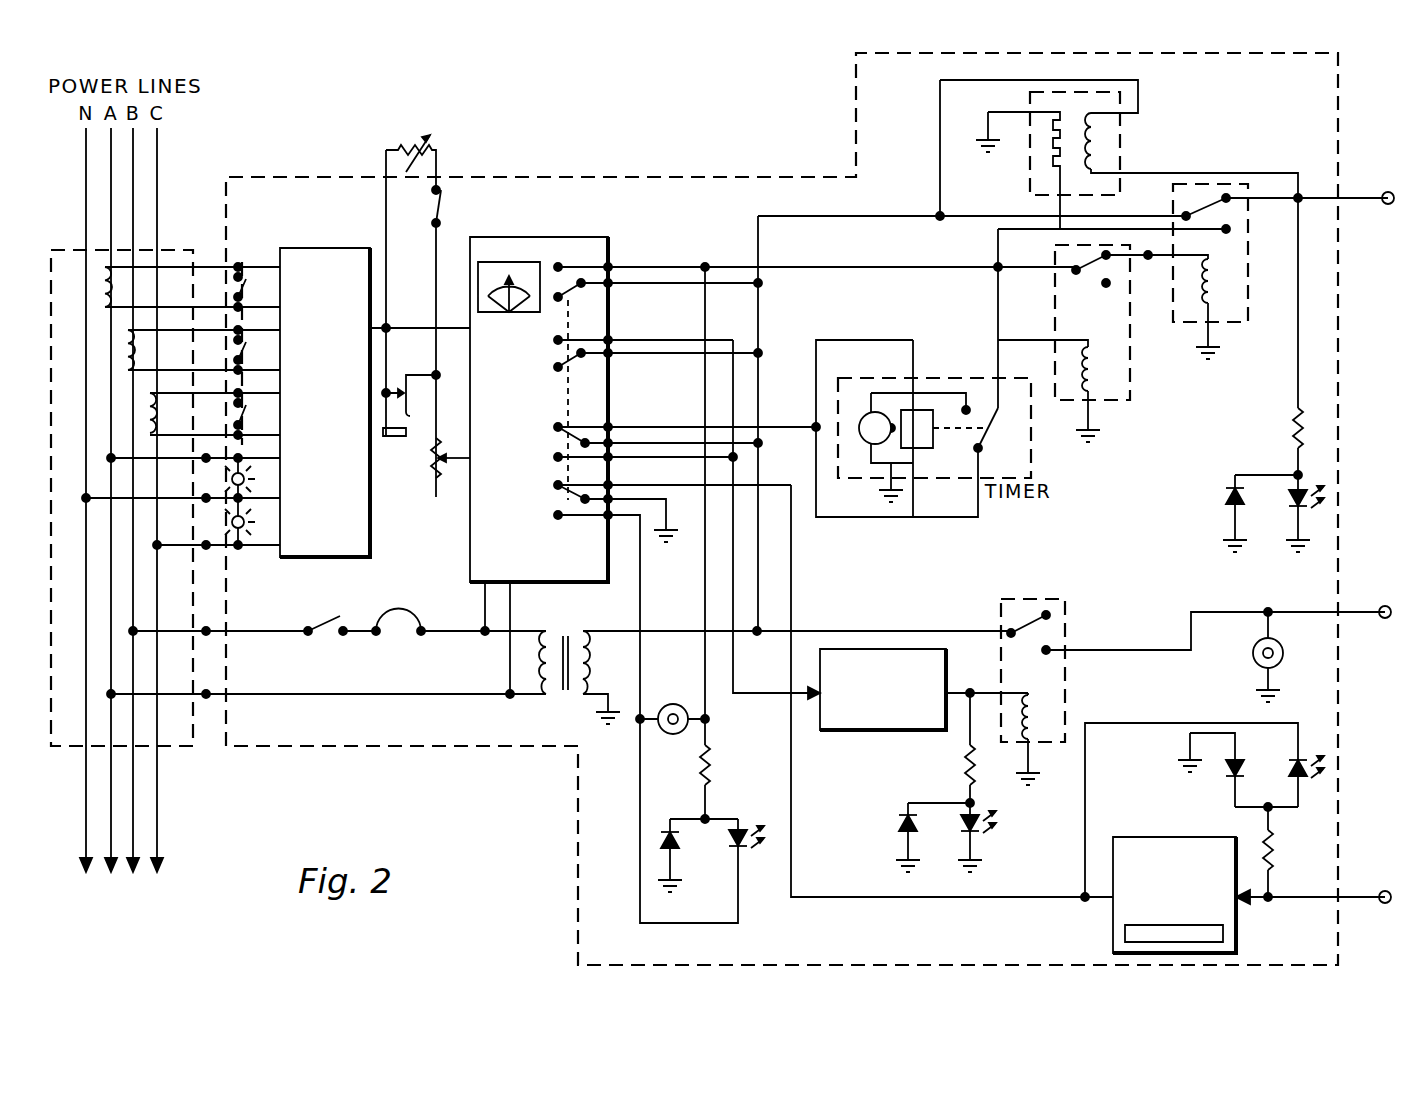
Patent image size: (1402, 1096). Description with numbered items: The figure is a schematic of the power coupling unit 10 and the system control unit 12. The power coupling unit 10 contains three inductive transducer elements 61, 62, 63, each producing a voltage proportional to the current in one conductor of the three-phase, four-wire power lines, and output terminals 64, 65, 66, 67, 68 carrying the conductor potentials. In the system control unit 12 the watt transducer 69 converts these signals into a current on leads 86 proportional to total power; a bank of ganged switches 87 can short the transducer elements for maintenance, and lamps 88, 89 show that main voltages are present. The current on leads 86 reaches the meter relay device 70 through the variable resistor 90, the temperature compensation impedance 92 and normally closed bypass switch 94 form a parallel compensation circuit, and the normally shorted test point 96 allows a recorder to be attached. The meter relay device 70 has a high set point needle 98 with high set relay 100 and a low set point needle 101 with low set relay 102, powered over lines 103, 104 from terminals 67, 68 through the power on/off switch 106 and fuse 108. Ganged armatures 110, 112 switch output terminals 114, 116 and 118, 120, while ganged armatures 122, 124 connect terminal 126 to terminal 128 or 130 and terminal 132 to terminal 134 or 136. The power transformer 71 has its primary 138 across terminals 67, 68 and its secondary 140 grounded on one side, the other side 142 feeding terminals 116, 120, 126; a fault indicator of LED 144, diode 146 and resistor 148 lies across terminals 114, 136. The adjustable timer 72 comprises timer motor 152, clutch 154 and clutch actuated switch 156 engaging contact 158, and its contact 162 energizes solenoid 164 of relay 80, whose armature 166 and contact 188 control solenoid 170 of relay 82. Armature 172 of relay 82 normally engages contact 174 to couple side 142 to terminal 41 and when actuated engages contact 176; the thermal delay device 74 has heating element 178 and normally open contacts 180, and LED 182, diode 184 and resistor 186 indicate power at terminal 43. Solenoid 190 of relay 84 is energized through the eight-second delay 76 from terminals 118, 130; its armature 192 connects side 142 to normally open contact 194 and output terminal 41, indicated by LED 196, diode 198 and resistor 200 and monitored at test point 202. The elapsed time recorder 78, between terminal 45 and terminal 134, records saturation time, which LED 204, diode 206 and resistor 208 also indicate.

The power coupling unit 10 is at (173, 757).
The system control unit 12 is at (343, 757).
The system power terminal 41 is at (1385, 608).
The system power terminal 43 is at (1384, 194).
The output terminal 45 is at (1384, 893).
The inductive transducer element 61 is at (104, 287).
The inductive transducer element 62 is at (128, 350).
The inductive transducer element 63 is at (150, 413).
The output terminal 64 is at (208, 462).
The output terminal 65 is at (208, 500).
The output terminal 66 is at (208, 547).
The output terminal 67 is at (208, 629).
The output terminal 68 is at (208, 692).
The watt transducer 69 is at (328, 470).
The meter relay device 70 is at (472, 556).
The power transformer 71 is at (566, 700).
The adjustable timer 72 is at (1012, 378).
The thermal time delay device 74 is at (1122, 150).
The eight-second delay 76 is at (878, 735).
The elapsed time recorder 78 is at (1170, 838).
The relay 80 is at (1132, 384).
The relay 82 is at (1238, 322).
The relay 84 is at (1047, 599).
The output leads 86 is at (388, 331).
The bank of ganged switches 87 is at (246, 266).
The lamp 88 is at (252, 480).
The lamp 89 is at (252, 522).
The variable resistor 90 is at (438, 465).
The temperature compensation impedance 92 is at (410, 150).
The temperature compensation bypass switch 94 is at (441, 206).
The test point 96 is at (406, 432).
The high set point needle 98 is at (528, 300).
The high set relay 100 is at (560, 314).
The low set point needle 101 is at (492, 300).
The low set relay 102 is at (558, 455).
The line 103 is at (485, 628).
The line 104 is at (512, 628).
The power on/off switch 106 is at (328, 632).
The fuse 108 is at (395, 632).
The armature 110 is at (568, 268).
The armature 112 is at (583, 358).
The relay output terminal 114 is at (628, 268).
The relay output terminal 116 is at (618, 284).
The relay output terminal 118 is at (626, 341).
The relay output terminal 120 is at (626, 354).
The armature 122 is at (560, 426).
The armature 124 is at (556, 500).
The output terminal 126 is at (640, 444).
The output terminal 128 is at (622, 436).
The output terminal 130 is at (618, 460).
The output terminal 132 is at (650, 500).
The output terminal 134 is at (640, 486).
The output terminal 136 is at (650, 516).
The primary 138 is at (546, 695).
The secondary 140 is at (590, 670).
The top side of secondary 142 is at (590, 631).
The LED 144 is at (746, 835).
The diode 146 is at (680, 845).
The resistor 148 is at (712, 770).
The timer motor 152 is at (862, 412).
The electrically actuated clutch 154 is at (920, 410).
The clutch actuated switch 156 is at (983, 450).
The contact 158 is at (968, 405).
The switch contact 162 is at (1000, 410).
The actuating solenoid 164 is at (1100, 362).
The armature 166 is at (1075, 268).
The solenoid 170 is at (1218, 275).
The armature 172 is at (1186, 214).
The contact 174 is at (1222, 198).
The contact 176 is at (1230, 229).
The heating element 178 is at (1055, 160).
The normally open contacts 180 is at (1105, 138).
The LED 182 is at (1296, 500).
The diode 184 is at (1232, 500).
The resistor 186 is at (1296, 430).
The contact 188 is at (1112, 258).
The solenoid 190 is at (1040, 714).
The armature 192 is at (1013, 630).
The normally open contact 194 is at (1052, 648).
The LED 196 is at (975, 838).
The diode 198 is at (905, 830).
The resistor 200 is at (968, 765).
The test point 202 is at (1255, 650).
The LED 204 is at (1296, 768).
The diode 206 is at (1244, 772).
The resistor 208 is at (1277, 840).